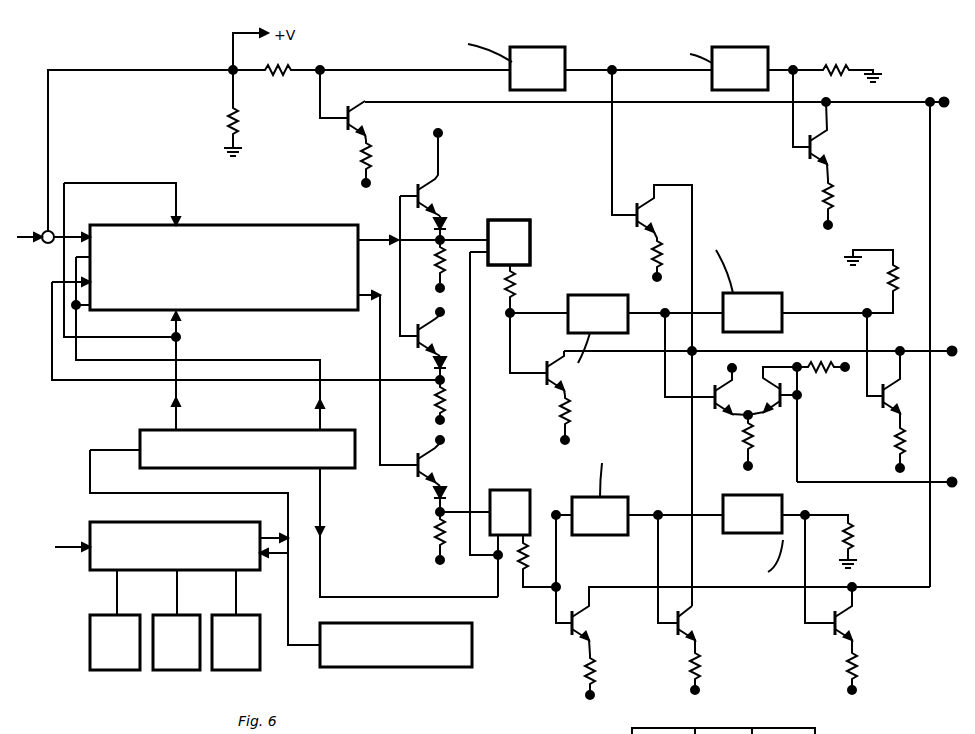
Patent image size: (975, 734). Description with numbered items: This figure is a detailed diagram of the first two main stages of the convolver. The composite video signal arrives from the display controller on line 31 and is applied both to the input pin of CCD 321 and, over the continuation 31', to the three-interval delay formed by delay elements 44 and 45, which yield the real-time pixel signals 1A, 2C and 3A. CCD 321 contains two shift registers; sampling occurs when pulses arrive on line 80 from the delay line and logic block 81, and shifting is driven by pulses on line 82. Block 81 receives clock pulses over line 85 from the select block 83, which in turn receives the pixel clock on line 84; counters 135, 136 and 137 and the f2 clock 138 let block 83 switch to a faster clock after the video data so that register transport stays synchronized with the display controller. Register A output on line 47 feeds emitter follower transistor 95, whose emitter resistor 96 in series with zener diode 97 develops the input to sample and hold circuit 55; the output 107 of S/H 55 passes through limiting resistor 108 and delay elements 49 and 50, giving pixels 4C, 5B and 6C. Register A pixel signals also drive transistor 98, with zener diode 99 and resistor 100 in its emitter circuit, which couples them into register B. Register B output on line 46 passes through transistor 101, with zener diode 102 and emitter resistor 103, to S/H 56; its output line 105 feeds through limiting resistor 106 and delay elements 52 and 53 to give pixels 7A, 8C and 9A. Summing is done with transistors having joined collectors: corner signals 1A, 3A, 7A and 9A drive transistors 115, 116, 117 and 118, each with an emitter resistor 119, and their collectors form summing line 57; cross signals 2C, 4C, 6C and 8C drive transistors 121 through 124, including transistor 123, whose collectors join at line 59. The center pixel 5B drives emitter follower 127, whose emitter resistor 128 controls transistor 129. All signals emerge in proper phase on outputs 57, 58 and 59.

The line 31 is at (53, 220).
The continuation of line 31' is at (140, 134).
The delay element / pixel signal 1A is at (324, 66).
The delay element 44 is at (533, 47).
The delay element / pixel signal 2C is at (612, 60).
The delay element 45 is at (741, 47).
The delay element / pixel signal 3A is at (795, 60).
The summing point or line 57 is at (940, 108).
The transistor 115 is at (345, 120).
The emitter resistor 119 is at (372, 160).
The transistor 95 is at (425, 190).
The zener diode 97 is at (446, 220).
The output line 47 is at (487, 222).
The sample and hold circuit 55 is at (530, 224).
The transistor 121 is at (630, 205).
The transistor 116 is at (805, 150).
The CCD 321 is at (287, 225).
The emitter resistor 96 is at (436, 264).
The transistor 98 is at (426, 338).
The zener diode 99 is at (436, 365).
The resistor 100 is at (436, 398).
The transistor 101 is at (416, 466).
The zener diode 102 is at (436, 495).
The emitter resistor 103 is at (436, 528).
The output 107 is at (520, 280).
The limiting resistor 108 is at (518, 292).
The delay element 49 is at (607, 296).
The delay element / pixel signal 4C is at (513, 316).
The center pixel / point 5B is at (670, 306).
The delay element 50 is at (765, 293).
The delay element / pixel signal 6C is at (866, 308).
The output 58 is at (940, 350).
The transistor 127 is at (714, 410).
The transistor 129 is at (798, 398).
The emitter resistor 128 is at (766, 448).
The transistor 123 is at (880, 410).
The summing point or line 59 is at (945, 484).
The output line 46 is at (478, 506).
The sample and hold circuit 56 is at (520, 490).
The delay element / pixel signal 7A is at (558, 510).
The delay element 52 is at (618, 497).
The delay element / pixel signal 8C is at (662, 504).
The delay element / pixel signal 9A is at (810, 512).
The delay element 53 is at (778, 533).
The transistor 117 is at (580, 626).
The transistor 124 is at (690, 623).
The transistor 118 is at (830, 630).
The line 80 is at (136, 334).
The line 82 is at (255, 360).
The delay line and logic block 81 is at (245, 430).
The line 85 is at (185, 493).
The line 84 is at (56, 549).
The select block 83 is at (214, 570).
The counter 135 is at (100, 672).
The counter 136 is at (180, 672).
The counter stage 137 is at (245, 672).
The clock or oscillator circuit 138 is at (414, 667).
The output line 105 is at (540, 556).
The limiting resistor 106 is at (535, 572).